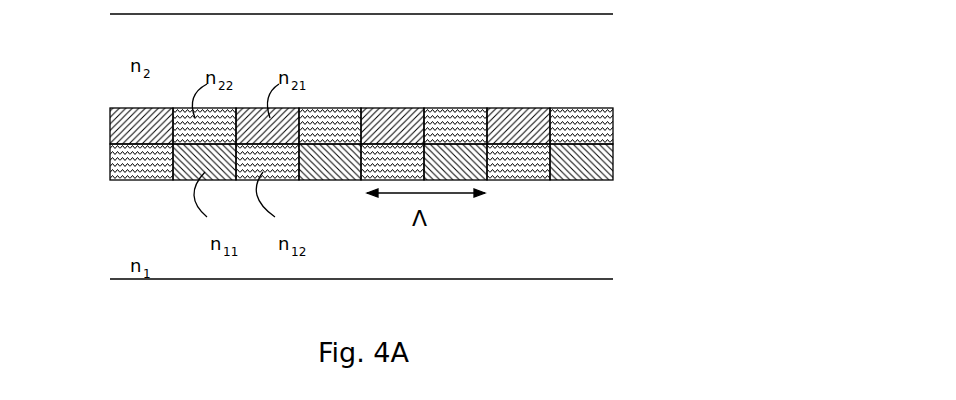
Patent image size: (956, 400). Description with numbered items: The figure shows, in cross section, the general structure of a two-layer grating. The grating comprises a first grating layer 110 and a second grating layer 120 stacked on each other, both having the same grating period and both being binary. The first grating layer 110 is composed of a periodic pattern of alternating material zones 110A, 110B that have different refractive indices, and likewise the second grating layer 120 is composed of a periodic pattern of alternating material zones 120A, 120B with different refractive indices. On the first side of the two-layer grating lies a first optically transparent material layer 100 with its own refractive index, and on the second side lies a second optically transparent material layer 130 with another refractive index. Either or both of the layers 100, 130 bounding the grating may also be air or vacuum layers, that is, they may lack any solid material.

The first optically transparent material layer 100 is at (91, 181).
The first grating layer 110 is at (370, 192).
The material zone 110A is at (607, 163).
The material zone 110B is at (530, 173).
The second grating layer 120 is at (379, 97).
The material zone 120A is at (524, 115).
The material zone 120B is at (607, 123).
The second optically transparent material layer 130 is at (91, 15).